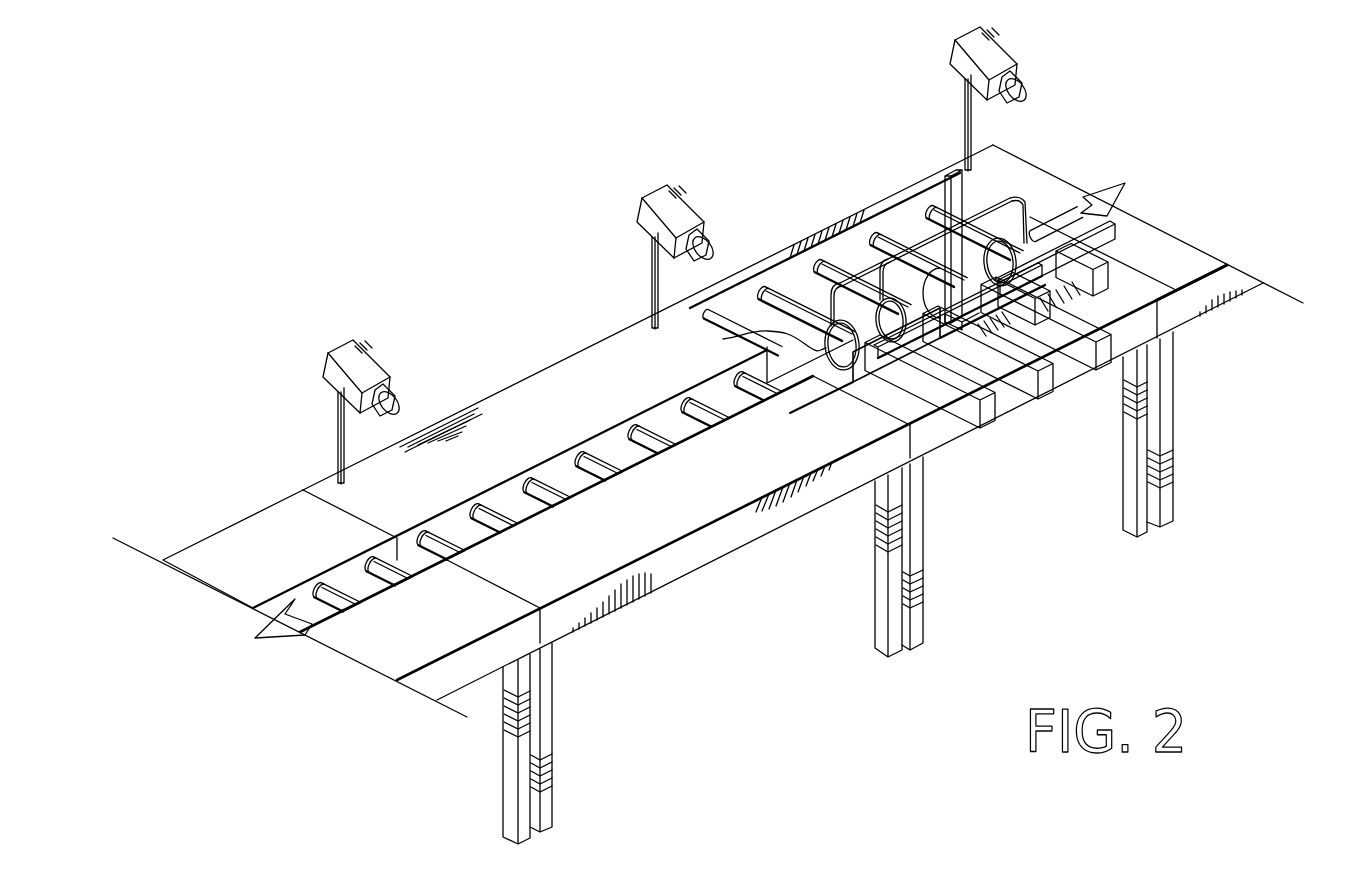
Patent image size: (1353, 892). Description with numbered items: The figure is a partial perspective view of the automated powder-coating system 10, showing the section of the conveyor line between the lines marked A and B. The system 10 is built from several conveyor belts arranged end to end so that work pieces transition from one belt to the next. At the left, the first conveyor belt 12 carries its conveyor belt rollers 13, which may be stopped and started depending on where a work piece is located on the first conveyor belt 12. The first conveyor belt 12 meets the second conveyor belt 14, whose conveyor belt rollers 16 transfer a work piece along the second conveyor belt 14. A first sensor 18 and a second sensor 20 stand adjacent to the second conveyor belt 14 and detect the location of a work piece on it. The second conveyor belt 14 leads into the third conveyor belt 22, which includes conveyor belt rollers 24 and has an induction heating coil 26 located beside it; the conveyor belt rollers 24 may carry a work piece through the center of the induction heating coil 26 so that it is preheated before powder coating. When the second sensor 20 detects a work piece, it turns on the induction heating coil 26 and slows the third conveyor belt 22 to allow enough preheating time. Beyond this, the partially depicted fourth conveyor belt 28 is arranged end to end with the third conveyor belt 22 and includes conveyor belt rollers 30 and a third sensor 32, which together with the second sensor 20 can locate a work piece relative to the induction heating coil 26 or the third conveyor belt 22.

The automated powder-coating system 10 is at (244, 118).
The first conveyor belt 12 is at (266, 533).
The conveyor belt rollers 13 is at (320, 584).
The second conveyor belt 14 is at (560, 372).
The conveyor belt rollers 16 is at (646, 428).
The first sensor 18 is at (343, 344).
The second sensor 20 is at (655, 188).
The third conveyor belt 22 is at (775, 260).
The conveyor belt rollers 24 is at (876, 232).
The induction heating coil 26 is at (738, 338).
The fourth conveyor belt 28 is at (1190, 256).
The conveyor belt rollers 30 is at (1092, 206).
The third sensor 32 is at (965, 30).